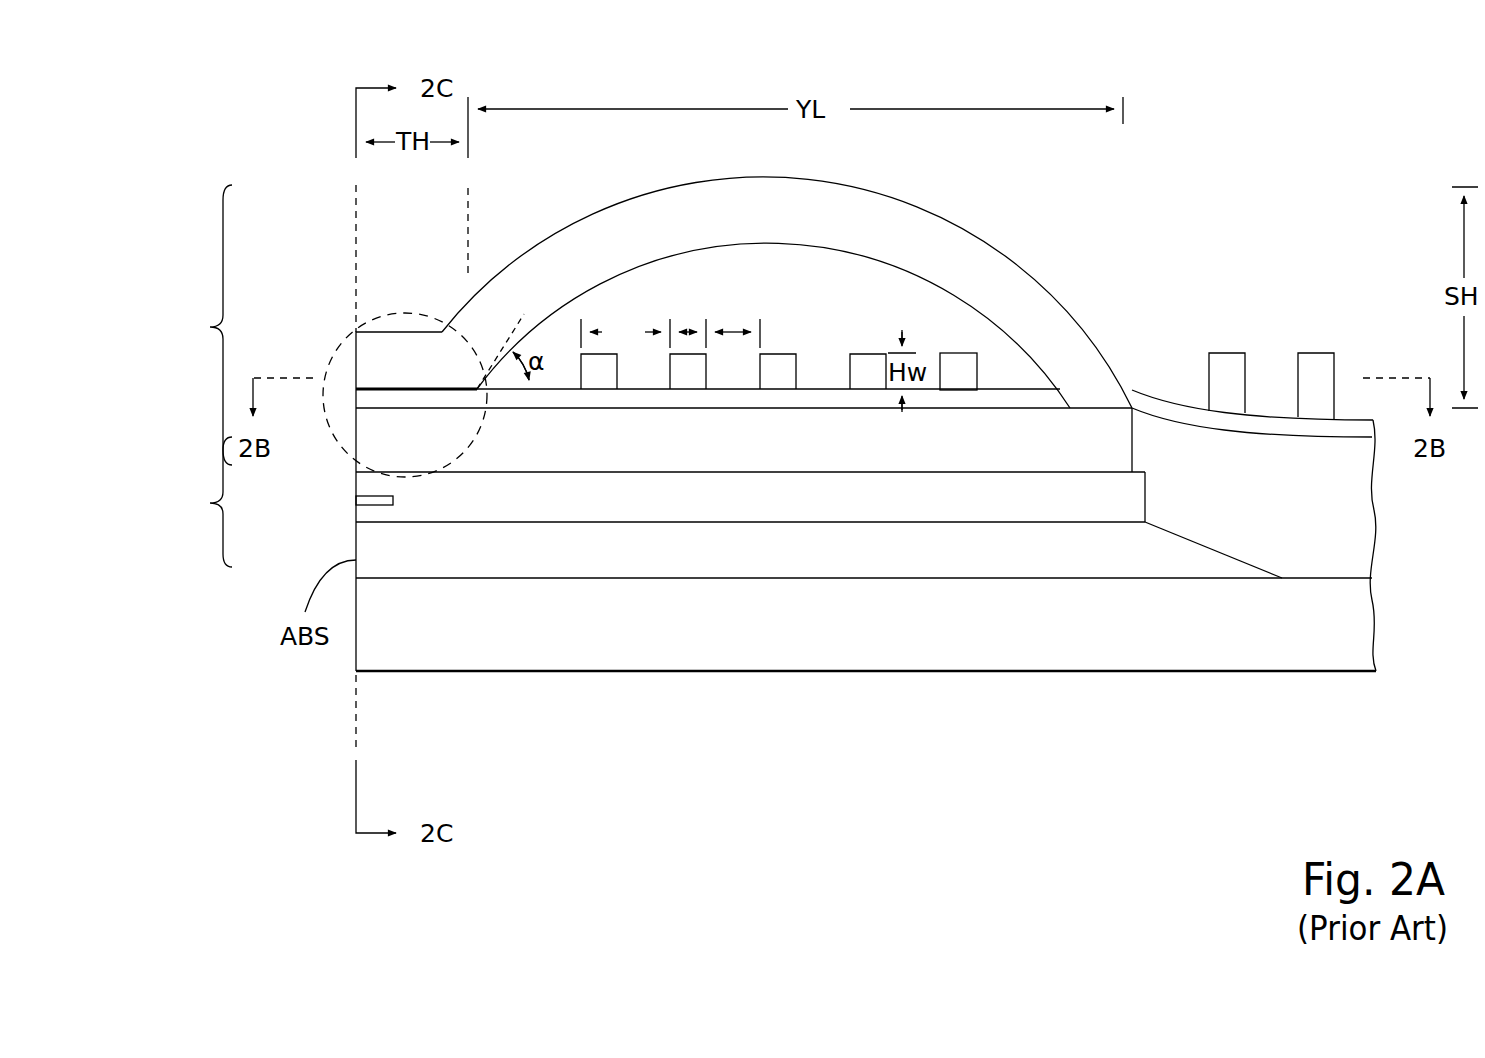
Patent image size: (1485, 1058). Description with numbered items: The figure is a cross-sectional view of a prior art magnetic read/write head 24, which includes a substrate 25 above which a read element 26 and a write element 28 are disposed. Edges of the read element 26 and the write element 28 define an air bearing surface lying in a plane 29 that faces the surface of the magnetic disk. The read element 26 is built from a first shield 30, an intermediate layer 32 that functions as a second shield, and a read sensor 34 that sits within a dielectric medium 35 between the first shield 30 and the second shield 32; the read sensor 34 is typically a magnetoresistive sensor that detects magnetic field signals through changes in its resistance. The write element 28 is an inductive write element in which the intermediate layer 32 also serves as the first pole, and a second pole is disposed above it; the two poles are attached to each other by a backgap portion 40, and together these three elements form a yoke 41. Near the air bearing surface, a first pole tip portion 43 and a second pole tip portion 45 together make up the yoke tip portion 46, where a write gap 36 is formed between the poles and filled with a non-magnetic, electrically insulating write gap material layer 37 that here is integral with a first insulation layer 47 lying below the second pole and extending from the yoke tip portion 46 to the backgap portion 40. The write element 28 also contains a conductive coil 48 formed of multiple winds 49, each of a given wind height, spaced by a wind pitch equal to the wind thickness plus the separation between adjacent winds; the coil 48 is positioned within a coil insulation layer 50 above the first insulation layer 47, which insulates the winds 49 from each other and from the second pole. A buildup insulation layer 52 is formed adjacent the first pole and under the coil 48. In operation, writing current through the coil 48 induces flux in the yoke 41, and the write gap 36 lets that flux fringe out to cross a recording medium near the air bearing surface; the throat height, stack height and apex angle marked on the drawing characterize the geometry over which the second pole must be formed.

The magnetic read/write head 24 is at (1205, 100).
The substrate 25 is at (477, 633).
The read element 26 is at (202, 502).
The write element 28 is at (206, 325).
The plane 29 is at (357, 122).
The first shield 30 is at (477, 563).
The intermediate layer 32 is at (518, 458).
The read sensor 34 is at (393, 500).
The dielectric medium 35 is at (518, 510).
The write gap 36 is at (338, 385).
The write gap material layer 37 is at (375, 400).
The backgap portion 40 is at (1108, 380).
The yoke 41 is at (1033, 222).
The first pole tip portion 43 is at (420, 445).
The second pole tip portion 45 is at (420, 371).
The yoke tip portion 46 is at (385, 312).
The first insulation layer 47 is at (592, 400).
The conductive coil 48 is at (806, 332).
The winds 49 is at (973, 385).
The coil insulation layer 50 is at (793, 283).
The buildup insulation layer 52 is at (1283, 521).